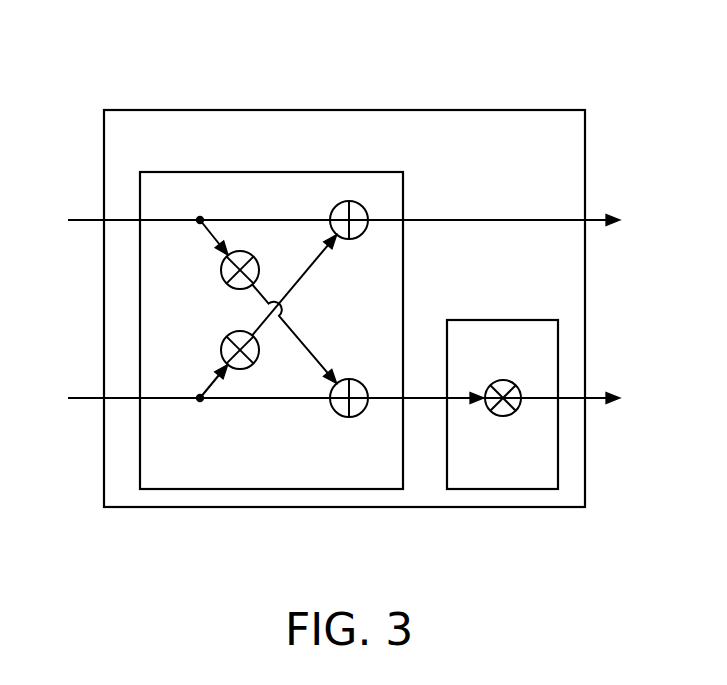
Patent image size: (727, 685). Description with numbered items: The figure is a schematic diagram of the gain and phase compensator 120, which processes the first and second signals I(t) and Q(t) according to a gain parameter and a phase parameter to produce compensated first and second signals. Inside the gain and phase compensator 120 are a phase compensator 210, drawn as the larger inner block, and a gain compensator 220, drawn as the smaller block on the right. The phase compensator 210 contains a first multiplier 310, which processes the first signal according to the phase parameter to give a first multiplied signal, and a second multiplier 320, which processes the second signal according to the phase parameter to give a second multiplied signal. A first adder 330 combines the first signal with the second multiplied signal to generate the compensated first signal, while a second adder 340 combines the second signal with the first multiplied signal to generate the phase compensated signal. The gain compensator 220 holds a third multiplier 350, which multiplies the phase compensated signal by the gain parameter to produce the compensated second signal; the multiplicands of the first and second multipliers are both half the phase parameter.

The gain and phase compensator 120 is at (149, 110).
The phase compensator 210 is at (160, 489).
The gain compensator 220 is at (540, 489).
The first multiplier 310 is at (238, 251).
The second multiplier 320 is at (240, 369).
The first adder 330 is at (352, 201).
The second adder 340 is at (347, 417).
The third multiplier 350 is at (500, 416).